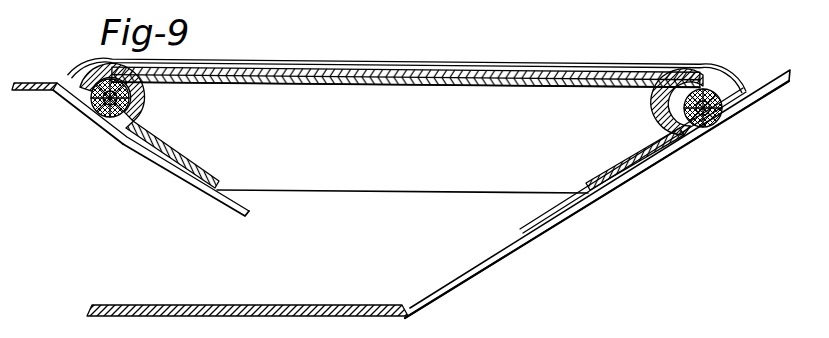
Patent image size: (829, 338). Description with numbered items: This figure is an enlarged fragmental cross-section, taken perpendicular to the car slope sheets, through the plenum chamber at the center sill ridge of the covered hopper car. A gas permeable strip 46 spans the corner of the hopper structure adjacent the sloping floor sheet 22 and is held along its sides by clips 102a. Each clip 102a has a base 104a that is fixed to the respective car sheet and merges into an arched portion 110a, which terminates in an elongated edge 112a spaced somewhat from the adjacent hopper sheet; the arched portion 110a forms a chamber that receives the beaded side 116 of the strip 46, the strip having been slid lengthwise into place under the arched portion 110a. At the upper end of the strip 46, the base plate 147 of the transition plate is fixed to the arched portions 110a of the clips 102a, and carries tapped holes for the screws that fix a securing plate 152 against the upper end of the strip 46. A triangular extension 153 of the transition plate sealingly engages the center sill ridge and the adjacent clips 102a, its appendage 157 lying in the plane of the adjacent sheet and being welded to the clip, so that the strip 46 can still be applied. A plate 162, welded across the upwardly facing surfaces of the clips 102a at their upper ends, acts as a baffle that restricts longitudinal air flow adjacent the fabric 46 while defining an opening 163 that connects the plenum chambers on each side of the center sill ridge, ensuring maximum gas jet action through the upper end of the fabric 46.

The sloping floor sheet 22 is at (480, 272).
The gas permeable strip 46 is at (544, 75).
The clip 102a is at (391, 126).
The base 104a is at (221, 181).
The arched portion 110a is at (142, 100).
The edge 112a is at (402, 163).
The beaded side 116 is at (100, 118).
The base plate 147 is at (588, 87).
The securing plate 152 is at (652, 63).
The triangular extension 153 is at (36, 82).
The appendage 157 is at (174, 170).
The plate 162 is at (619, 164).
The opening 163 is at (528, 212).